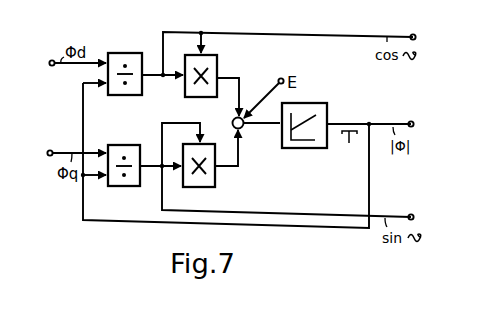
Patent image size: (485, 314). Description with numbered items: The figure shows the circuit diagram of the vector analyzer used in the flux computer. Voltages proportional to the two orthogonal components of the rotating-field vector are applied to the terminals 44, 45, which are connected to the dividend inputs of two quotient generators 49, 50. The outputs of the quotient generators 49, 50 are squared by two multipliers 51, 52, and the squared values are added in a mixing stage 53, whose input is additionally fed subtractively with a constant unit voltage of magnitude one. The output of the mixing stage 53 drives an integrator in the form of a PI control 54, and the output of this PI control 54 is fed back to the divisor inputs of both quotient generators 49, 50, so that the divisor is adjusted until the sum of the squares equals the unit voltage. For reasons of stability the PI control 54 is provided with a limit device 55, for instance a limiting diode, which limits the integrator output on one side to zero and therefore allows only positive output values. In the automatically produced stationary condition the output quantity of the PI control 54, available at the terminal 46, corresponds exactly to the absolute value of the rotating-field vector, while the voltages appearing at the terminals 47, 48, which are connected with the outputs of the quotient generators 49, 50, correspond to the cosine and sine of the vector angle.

The terminal 44 is at (67, 65).
The terminal 45 is at (67, 155).
The terminal 46 is at (427, 128).
The terminal 47 is at (431, 38).
The terminal 48 is at (427, 220).
The quotient generator 49 is at (121, 53).
The quotient generator 50 is at (118, 186).
The multiplier 51 is at (217, 61).
The multiplier 52 is at (215, 181).
The mixing stage 53 is at (233, 121).
The PI control 54 is at (300, 148).
The limit device 55 is at (349, 153).